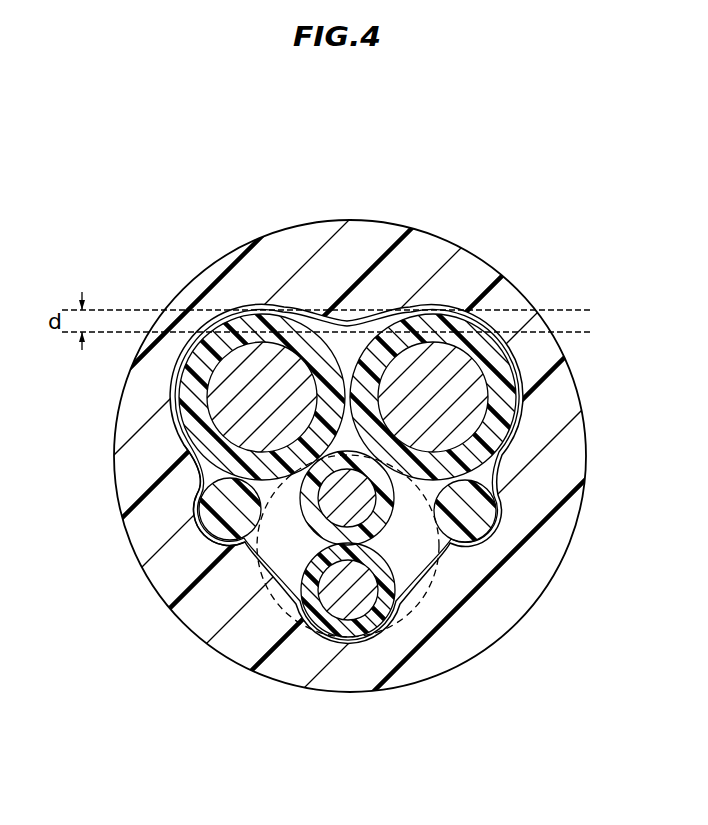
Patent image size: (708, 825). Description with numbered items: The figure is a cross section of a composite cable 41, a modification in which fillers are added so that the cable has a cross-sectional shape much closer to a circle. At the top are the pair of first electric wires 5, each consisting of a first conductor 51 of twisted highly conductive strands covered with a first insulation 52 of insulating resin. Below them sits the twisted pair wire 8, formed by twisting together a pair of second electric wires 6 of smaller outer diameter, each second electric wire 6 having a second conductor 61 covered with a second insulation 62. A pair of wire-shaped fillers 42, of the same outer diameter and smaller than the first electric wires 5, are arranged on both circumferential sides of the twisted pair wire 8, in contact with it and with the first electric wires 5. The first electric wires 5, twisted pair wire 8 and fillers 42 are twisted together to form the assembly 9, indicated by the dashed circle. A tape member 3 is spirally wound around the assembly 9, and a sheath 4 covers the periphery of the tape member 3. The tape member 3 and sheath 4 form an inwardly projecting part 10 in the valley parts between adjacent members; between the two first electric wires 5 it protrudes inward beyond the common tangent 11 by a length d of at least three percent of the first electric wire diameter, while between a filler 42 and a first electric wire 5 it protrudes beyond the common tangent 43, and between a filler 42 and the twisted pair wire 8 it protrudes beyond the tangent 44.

The tape member 3 is at (520, 428).
The sheath 4 is at (567, 413).
The first electric wire 5 is at (172, 393).
The second electric wire 6 is at (388, 628).
The twisted pair wire 8 is at (378, 541).
The assembly 9 is at (502, 523).
The inwardly projecting part 10 is at (345, 318).
The common tangent 11 is at (134, 308).
The composite cable 41 is at (188, 222).
The filler 42 is at (203, 505).
The common tangent 43 is at (184, 461).
The tangent 44 is at (217, 562).
The first conductor 51 is at (458, 362).
The first insulation 52 is at (510, 365).
The second conductor 61 is at (345, 607).
The second insulation 62 is at (362, 625).